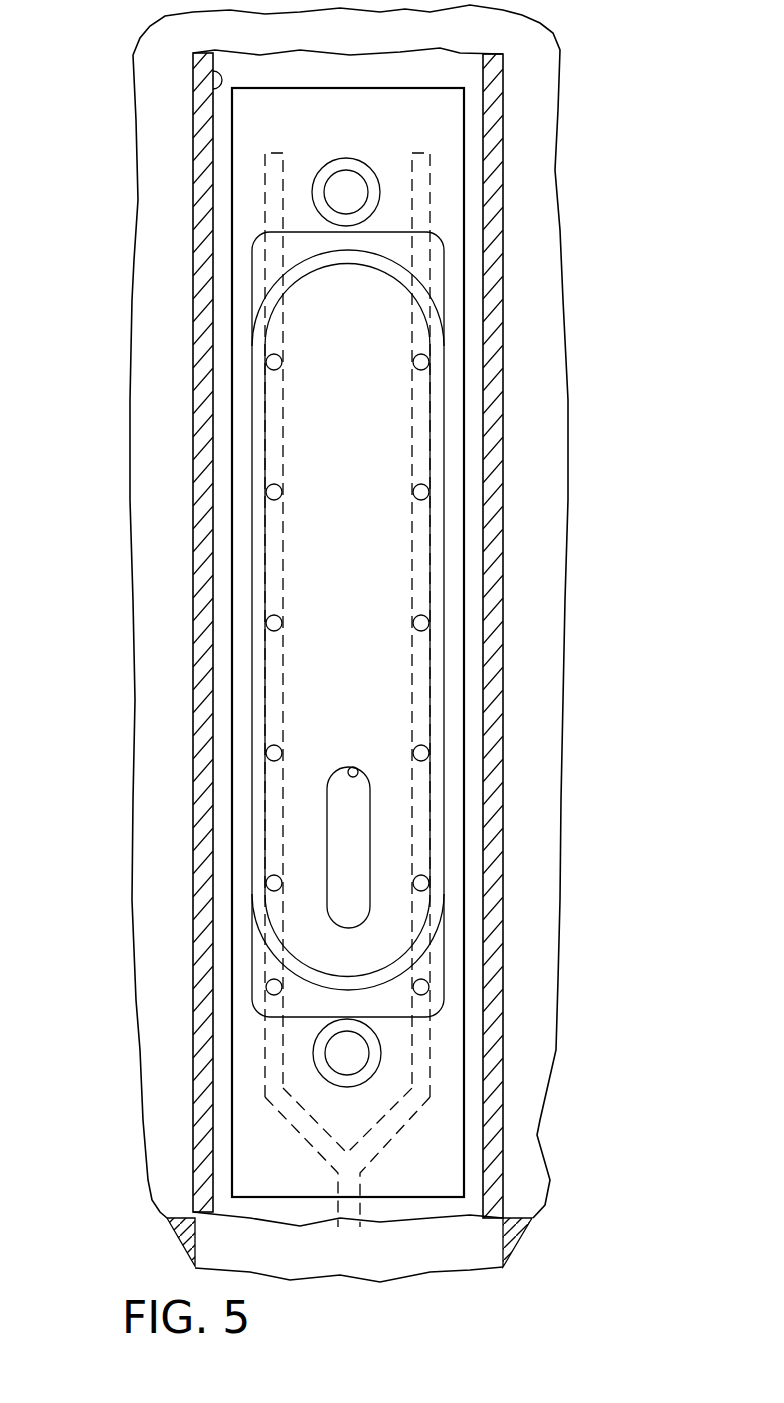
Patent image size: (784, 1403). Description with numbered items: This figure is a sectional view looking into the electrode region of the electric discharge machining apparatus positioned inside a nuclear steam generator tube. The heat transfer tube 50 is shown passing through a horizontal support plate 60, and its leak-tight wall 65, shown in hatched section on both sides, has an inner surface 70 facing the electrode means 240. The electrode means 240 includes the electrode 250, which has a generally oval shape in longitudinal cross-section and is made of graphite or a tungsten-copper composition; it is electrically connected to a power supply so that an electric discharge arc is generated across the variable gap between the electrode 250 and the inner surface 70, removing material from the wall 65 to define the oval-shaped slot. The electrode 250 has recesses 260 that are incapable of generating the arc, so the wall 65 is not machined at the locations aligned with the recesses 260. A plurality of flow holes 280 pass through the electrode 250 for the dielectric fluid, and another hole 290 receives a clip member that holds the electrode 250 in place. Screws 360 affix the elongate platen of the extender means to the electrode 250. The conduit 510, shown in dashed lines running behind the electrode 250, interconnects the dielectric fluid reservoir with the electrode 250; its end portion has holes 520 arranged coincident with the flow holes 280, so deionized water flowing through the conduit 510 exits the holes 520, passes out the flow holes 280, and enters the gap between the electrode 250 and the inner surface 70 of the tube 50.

The heat transfer tube 50 is at (503, 177).
The horizontal support plate 60 is at (515, 1228).
The wall 65 is at (193, 218).
The inner surface 70 is at (213, 70).
The electrode means 240 is at (215, 648).
The electrode 250 is at (252, 568).
The recess 260 is at (443, 578).
The flow hole 280 is at (422, 366).
The hole 290 is at (350, 768).
The screw 360 is at (362, 157).
The conduit 510 is at (272, 445).
The hole 520 is at (275, 356).